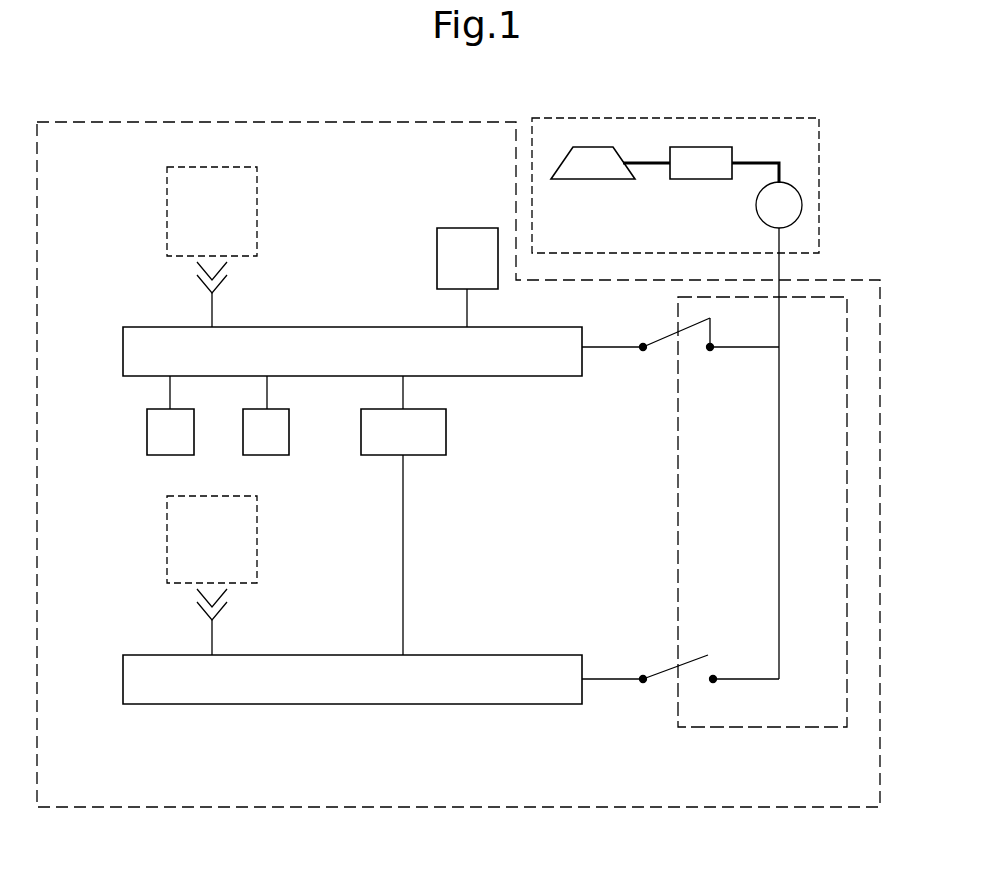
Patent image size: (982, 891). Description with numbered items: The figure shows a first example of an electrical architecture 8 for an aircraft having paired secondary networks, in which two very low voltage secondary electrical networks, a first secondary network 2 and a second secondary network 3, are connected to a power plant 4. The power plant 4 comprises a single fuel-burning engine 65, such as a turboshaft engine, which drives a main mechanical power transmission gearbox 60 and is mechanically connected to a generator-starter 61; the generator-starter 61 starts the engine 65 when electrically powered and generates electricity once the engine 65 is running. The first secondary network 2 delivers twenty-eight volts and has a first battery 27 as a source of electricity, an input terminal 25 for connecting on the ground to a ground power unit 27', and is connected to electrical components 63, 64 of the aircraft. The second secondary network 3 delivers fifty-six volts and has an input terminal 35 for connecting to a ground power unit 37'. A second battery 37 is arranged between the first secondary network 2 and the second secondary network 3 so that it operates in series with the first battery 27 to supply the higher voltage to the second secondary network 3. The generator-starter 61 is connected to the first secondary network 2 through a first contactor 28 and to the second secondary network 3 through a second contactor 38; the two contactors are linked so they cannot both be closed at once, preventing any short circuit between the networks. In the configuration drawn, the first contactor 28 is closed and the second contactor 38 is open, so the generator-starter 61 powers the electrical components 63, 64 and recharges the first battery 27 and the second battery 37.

The first secondary network 2 is at (137, 327).
The second secondary network 3 is at (250, 704).
The power plant 4 is at (819, 228).
The electrical architecture 8 is at (781, 807).
The input terminal 25 is at (210, 293).
The first battery 27 is at (428, 276).
The ground power unit 27' is at (261, 195).
The first contactor 28 is at (676, 340).
The input terminal 35 is at (214, 620).
The second battery 37 is at (442, 515).
The ground power unit 37' is at (166, 551).
The second contactor 38 is at (683, 665).
The main mechanical power transmission gearbox 60 is at (590, 179).
The generator-starter 61 is at (797, 190).
The electrical component 63 is at (163, 455).
The electrical component 64 is at (272, 455).
The fuel-burning engine 65 is at (700, 179).